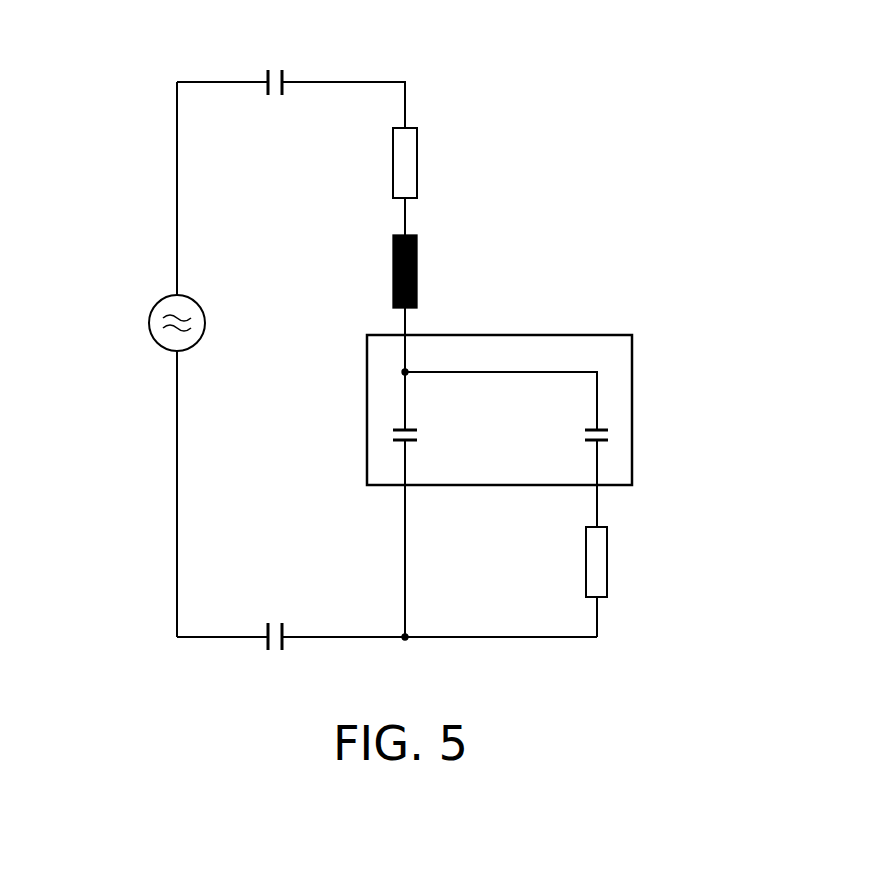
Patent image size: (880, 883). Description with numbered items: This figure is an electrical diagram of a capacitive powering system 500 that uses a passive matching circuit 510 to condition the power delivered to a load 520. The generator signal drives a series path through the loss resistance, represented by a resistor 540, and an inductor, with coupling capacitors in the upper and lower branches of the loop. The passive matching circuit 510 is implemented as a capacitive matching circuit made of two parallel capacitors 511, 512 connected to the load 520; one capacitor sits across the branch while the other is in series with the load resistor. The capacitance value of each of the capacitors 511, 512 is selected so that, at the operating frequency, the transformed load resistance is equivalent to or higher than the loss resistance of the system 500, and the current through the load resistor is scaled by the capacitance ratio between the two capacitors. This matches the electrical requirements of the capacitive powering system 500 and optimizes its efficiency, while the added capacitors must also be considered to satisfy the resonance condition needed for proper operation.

The capacitive powering system 500 is at (592, 92).
The passive matching circuit 510 is at (552, 335).
The parallel capacitor 511 is at (393, 436).
The parallel capacitor 512 is at (608, 433).
The load 520 is at (608, 537).
The resistor RS 540 is at (418, 145).